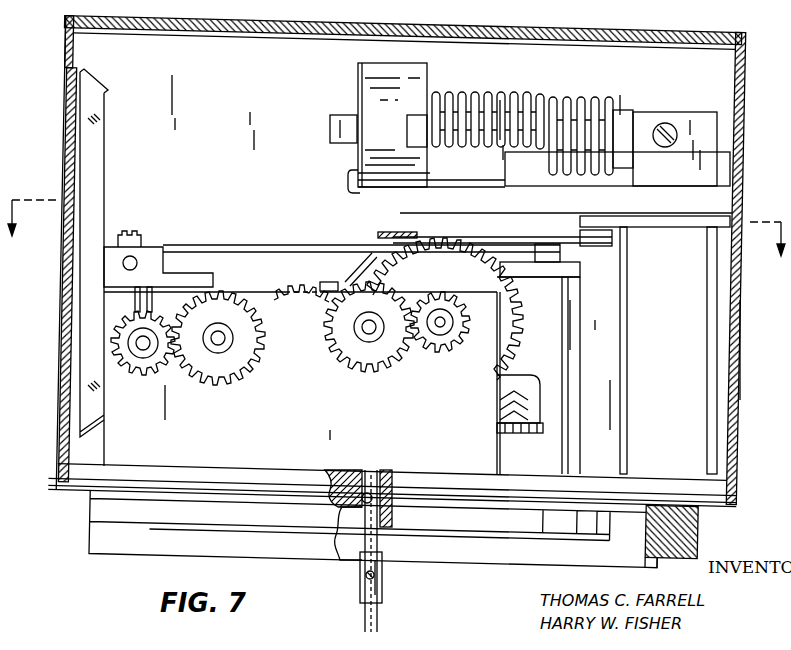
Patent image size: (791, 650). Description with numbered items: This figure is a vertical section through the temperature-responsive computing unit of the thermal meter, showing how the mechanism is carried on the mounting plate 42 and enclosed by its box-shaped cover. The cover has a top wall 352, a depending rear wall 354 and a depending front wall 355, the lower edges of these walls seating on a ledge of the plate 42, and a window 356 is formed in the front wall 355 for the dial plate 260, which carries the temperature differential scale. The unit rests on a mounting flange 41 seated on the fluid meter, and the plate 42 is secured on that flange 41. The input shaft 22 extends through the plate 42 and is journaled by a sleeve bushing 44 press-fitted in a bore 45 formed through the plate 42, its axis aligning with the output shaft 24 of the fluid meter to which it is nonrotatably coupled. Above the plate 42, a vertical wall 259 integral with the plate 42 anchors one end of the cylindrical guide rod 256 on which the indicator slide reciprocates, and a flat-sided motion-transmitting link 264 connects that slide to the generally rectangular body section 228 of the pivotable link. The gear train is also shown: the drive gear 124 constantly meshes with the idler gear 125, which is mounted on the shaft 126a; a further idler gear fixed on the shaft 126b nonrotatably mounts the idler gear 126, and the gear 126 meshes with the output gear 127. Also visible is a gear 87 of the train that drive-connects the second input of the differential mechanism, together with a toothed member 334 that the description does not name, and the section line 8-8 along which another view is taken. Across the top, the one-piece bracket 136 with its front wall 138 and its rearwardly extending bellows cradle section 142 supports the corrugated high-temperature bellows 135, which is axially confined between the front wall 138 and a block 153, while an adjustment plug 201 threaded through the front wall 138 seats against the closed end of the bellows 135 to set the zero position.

The top wall 352 is at (677, 30).
The rear wall 354 is at (742, 120).
The front wall 355 is at (57, 454).
The window 356 is at (68, 70).
The dial plate 260 is at (80, 243).
The vertical wall 259 is at (372, 442).
The motion-transmitting link 264 is at (204, 246).
The guide rod 256 is at (133, 262).
The body section 228 is at (396, 233).
The output gear 127 is at (145, 370).
The idler gear 126 is at (217, 370).
The shaft 126b is at (222, 343).
The shaft 126a is at (366, 329).
The idler gear 125 is at (366, 362).
The drive gear 124 is at (447, 345).
The large gear 334 is at (520, 288).
The gear 87 is at (520, 340).
The bracket 136 is at (357, 78).
The front wall 138 is at (352, 97).
The adjustment plug 201 is at (342, 143).
The high-temperature bellows 135 is at (553, 96).
The bellows cradle section 142 is at (463, 182).
The block 153 is at (676, 112).
The section line 8- 8 is at (394, 218).
The mounting plate 42 is at (600, 472).
The mounting flange 41 is at (698, 527).
The bore 45 is at (352, 512).
The sleeve bushing 44 is at (355, 538).
The input shaft 22 is at (382, 538).
The output shaft 24 is at (380, 617).